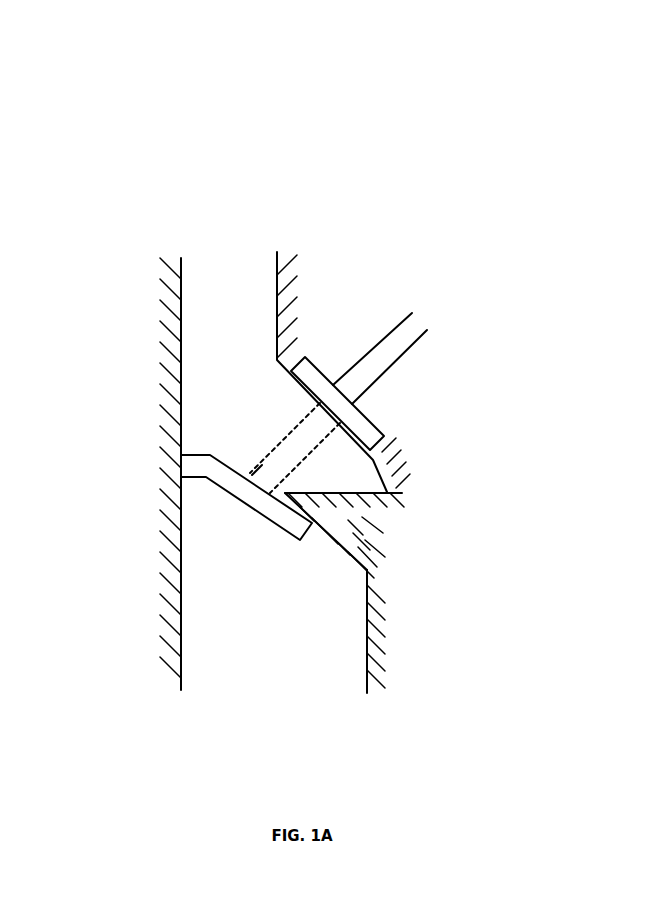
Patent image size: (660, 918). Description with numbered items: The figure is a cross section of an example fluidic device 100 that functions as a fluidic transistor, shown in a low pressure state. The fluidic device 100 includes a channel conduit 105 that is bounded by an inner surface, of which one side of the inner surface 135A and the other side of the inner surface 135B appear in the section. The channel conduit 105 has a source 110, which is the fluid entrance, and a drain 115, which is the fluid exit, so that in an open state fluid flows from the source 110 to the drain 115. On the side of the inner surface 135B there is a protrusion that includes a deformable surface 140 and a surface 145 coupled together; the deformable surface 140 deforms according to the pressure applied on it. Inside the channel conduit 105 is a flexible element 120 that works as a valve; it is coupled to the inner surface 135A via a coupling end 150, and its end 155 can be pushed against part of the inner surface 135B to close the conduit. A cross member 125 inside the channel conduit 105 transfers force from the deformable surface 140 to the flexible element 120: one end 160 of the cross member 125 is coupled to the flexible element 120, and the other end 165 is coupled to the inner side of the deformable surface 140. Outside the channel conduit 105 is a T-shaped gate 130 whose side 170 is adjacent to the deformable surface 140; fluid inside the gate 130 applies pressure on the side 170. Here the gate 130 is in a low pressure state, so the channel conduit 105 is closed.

The fluidic device 100 is at (197, 148).
The channel conduit 105 is at (212, 683).
The source 110 is at (268, 690).
The drain 115 is at (237, 260).
The flexible element 120 is at (248, 508).
The cross member 125 is at (277, 446).
The gate 130 is at (420, 341).
The inner surface 135A is at (185, 293).
The inner surface 135B is at (425, 655).
The deformable surface 140 is at (388, 495).
The surface 145 is at (360, 500).
The coupling end 150 is at (188, 464).
The end 155 is at (303, 538).
The end 160 is at (258, 470).
The end 165 is at (333, 390).
The side 170 is at (347, 421).